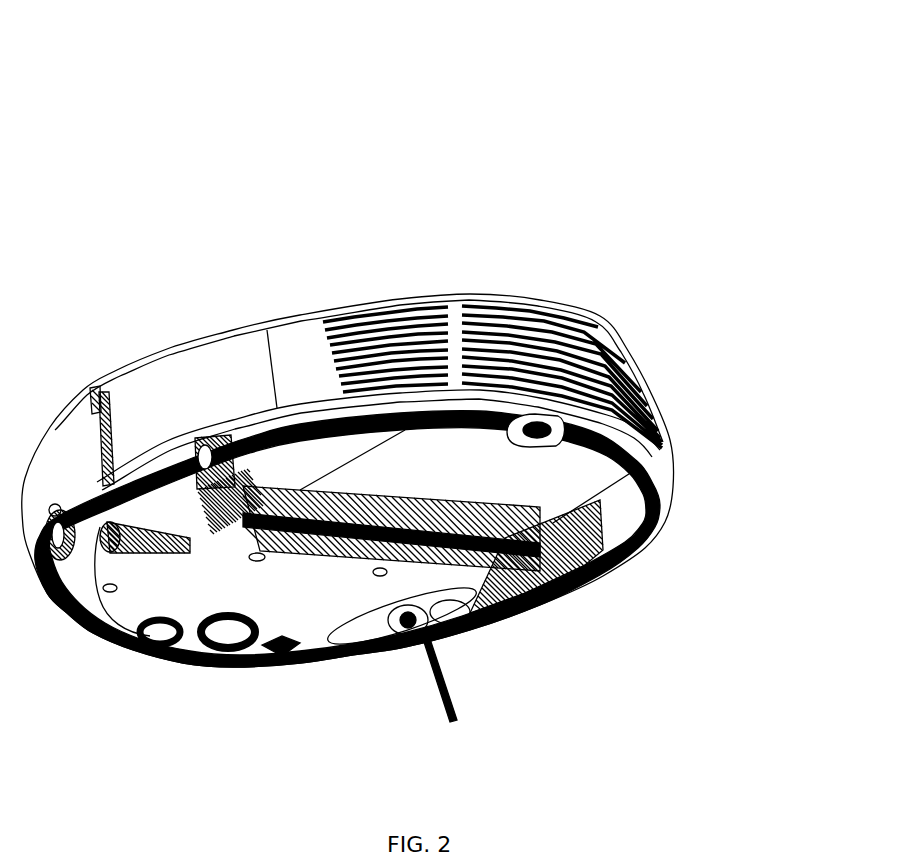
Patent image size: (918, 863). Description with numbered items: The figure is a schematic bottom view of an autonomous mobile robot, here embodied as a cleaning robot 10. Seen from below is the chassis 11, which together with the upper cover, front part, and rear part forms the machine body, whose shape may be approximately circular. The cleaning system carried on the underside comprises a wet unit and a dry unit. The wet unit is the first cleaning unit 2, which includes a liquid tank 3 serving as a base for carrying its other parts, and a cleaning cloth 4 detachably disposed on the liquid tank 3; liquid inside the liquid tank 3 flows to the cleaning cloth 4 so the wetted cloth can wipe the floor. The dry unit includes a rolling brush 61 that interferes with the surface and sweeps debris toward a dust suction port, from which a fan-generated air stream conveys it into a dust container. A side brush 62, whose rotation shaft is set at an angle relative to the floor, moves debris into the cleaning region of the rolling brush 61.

The cleaning robot 10 is at (352, 72).
The first cleaning unit 2 is at (683, 490).
The liquid tank 3 is at (640, 430).
The cleaning cloth 4 is at (627, 513).
The chassis 11 is at (178, 592).
The rolling brush 61 is at (458, 553).
The side brush 62 is at (413, 673).